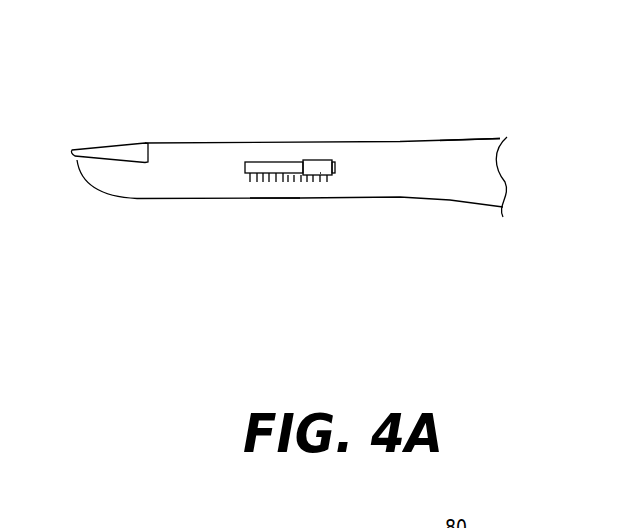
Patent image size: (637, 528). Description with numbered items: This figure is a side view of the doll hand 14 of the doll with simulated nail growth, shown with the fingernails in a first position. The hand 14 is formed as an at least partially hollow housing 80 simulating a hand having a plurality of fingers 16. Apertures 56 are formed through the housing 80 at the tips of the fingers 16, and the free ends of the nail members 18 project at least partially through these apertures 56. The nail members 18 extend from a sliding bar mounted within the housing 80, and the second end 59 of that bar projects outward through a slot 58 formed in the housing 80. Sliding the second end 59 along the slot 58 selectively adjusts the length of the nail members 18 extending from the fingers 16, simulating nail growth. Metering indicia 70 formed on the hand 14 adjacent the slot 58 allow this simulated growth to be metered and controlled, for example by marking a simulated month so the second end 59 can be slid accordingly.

The doll hand 14 is at (488, 193).
The fingers 16 is at (273, 193).
The nail members 18 is at (73, 160).
The apertures 56 is at (149, 163).
The slot 58 is at (282, 164).
The second end 59 is at (320, 172).
The metering indicia 70 is at (336, 178).
The at least partially hollow housing 80 is at (483, 138).